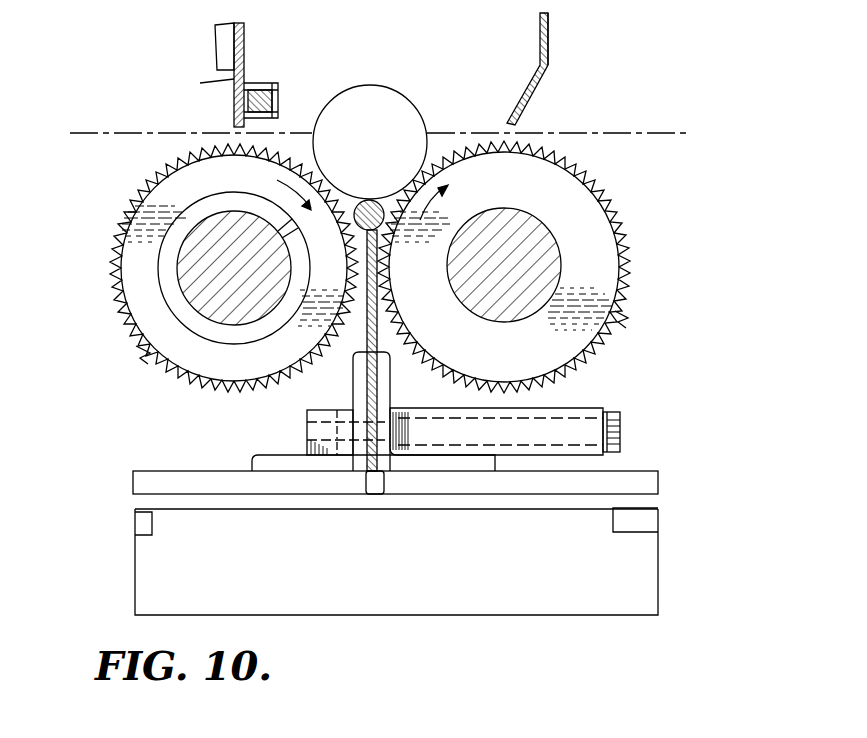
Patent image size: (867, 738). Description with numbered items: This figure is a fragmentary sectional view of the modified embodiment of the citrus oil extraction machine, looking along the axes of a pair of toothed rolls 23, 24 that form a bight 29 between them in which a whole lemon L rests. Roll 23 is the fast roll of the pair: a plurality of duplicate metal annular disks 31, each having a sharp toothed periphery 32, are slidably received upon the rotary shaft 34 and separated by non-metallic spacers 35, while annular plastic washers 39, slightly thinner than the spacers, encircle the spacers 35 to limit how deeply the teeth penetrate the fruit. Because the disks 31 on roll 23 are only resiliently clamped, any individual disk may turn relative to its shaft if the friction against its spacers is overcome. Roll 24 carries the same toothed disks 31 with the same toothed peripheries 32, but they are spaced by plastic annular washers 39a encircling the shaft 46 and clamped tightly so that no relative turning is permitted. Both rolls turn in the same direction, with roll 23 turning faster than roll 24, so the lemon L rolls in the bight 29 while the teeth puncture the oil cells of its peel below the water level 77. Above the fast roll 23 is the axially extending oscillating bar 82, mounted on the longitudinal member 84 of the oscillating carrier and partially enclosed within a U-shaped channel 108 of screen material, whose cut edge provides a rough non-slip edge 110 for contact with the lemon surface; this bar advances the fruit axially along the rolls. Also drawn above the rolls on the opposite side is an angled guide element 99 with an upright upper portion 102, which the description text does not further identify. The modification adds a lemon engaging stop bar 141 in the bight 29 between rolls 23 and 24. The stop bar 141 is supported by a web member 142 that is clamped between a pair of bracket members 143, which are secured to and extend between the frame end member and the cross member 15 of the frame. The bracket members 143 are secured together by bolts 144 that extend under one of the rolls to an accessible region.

The cross member 15 is at (392, 598).
The roll 23 is at (202, 286).
The roll 24 is at (541, 267).
The bight 29 is at (354, 199).
The annular disk 31 is at (112, 283).
The toothed periphery 32 is at (150, 355).
The rotary shaft 34 is at (198, 248).
The non-metallic spacer 35 is at (190, 222).
The annular plastic washer 39 is at (186, 350).
The plastic annular washer 39a is at (588, 238).
The shaft 46 is at (533, 235).
The water level 77 is at (120, 131).
The oscillating bar 82 is at (260, 90).
The longitudinal member 84 is at (241, 48).
The guide blade 99 is at (564, 69).
The guide blade upper portion 102 is at (549, 33).
The U-shaped channel 108 is at (193, 90).
The non-slip edge 110 is at (299, 85).
The stop bar 141 is at (382, 237).
The web member 142 is at (366, 332).
The bracket member 143 is at (400, 392).
The bolt 144 is at (621, 440).
The lemon L is at (386, 95).